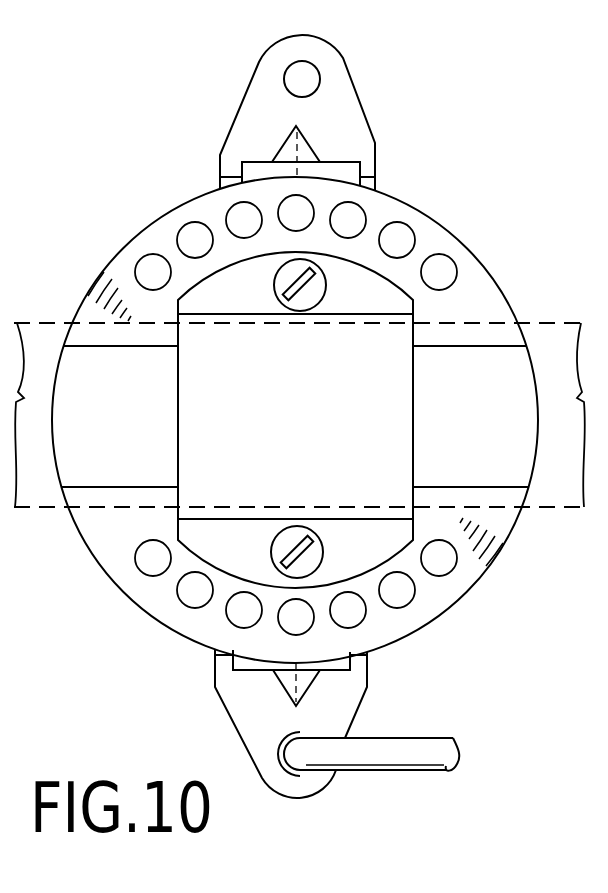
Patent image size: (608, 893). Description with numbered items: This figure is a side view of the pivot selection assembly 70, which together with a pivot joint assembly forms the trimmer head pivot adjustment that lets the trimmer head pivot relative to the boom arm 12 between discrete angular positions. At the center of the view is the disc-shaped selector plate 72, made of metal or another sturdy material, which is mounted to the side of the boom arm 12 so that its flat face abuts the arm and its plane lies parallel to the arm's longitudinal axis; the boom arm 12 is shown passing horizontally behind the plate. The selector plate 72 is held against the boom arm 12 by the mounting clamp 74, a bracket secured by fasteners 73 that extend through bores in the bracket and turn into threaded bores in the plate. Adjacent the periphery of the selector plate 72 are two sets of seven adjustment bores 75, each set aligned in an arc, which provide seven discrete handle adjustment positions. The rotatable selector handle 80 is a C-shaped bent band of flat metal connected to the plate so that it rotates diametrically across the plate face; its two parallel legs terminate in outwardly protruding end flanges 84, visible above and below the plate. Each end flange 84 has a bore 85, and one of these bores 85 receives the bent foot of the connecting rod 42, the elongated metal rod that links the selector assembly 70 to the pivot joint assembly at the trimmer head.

The boom arm 12 is at (547, 340).
The connecting rod 42 is at (416, 756).
The pivot selection assembly 70 is at (110, 164).
The selector plate 72 is at (435, 239).
The fasteners 73 is at (285, 278).
The mounting clamp 74 is at (387, 351).
The adjustment bores 75 is at (448, 283).
The selector handle 80 is at (369, 118).
The end flanges 84 is at (261, 113).
The bores 85 is at (296, 74).